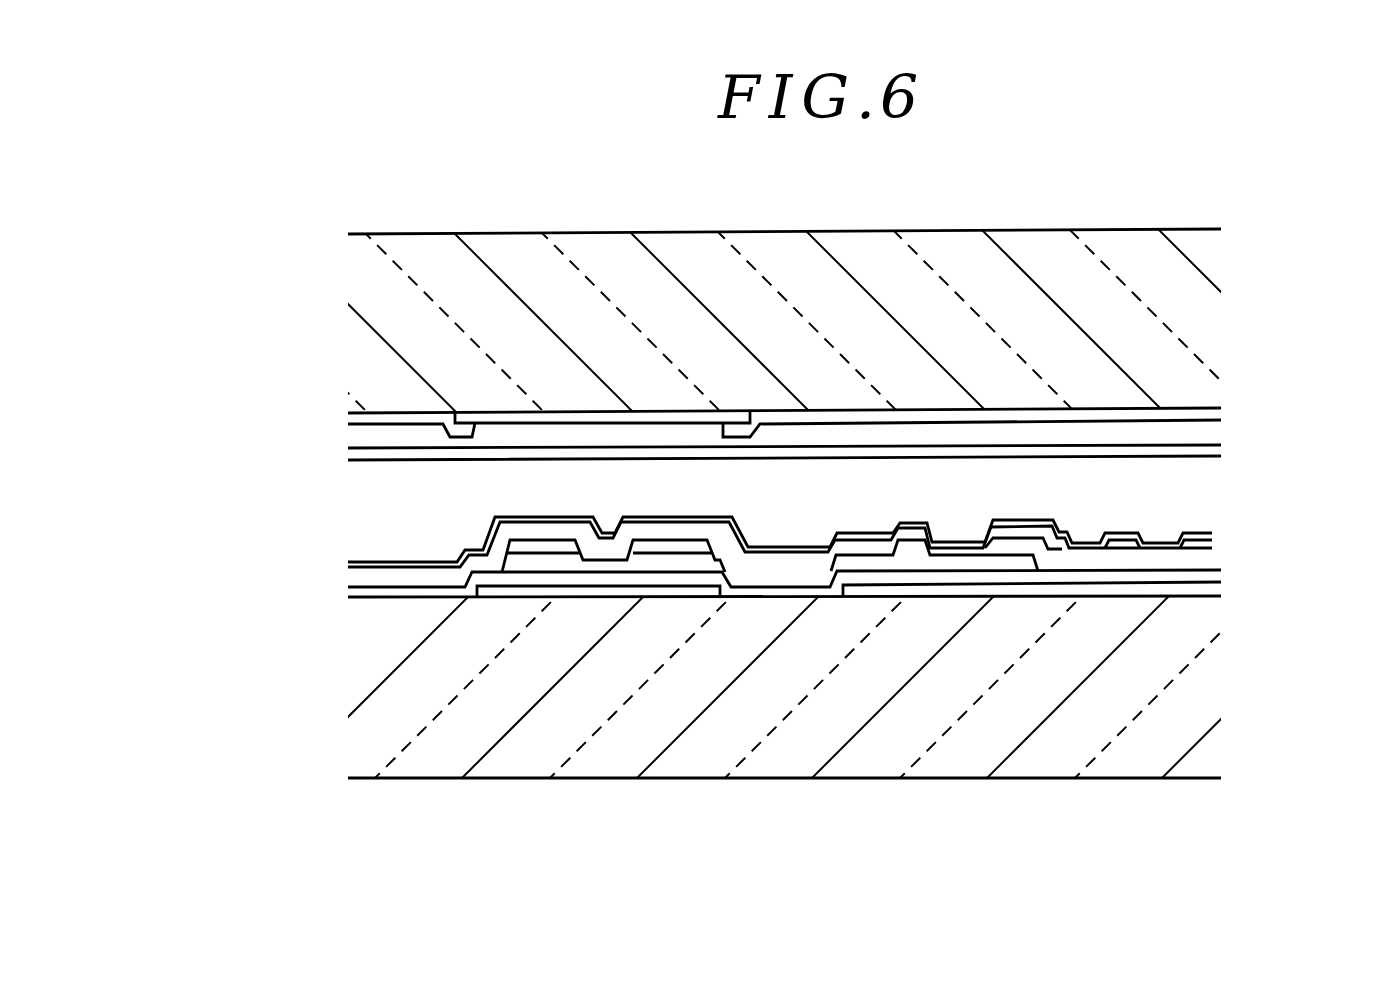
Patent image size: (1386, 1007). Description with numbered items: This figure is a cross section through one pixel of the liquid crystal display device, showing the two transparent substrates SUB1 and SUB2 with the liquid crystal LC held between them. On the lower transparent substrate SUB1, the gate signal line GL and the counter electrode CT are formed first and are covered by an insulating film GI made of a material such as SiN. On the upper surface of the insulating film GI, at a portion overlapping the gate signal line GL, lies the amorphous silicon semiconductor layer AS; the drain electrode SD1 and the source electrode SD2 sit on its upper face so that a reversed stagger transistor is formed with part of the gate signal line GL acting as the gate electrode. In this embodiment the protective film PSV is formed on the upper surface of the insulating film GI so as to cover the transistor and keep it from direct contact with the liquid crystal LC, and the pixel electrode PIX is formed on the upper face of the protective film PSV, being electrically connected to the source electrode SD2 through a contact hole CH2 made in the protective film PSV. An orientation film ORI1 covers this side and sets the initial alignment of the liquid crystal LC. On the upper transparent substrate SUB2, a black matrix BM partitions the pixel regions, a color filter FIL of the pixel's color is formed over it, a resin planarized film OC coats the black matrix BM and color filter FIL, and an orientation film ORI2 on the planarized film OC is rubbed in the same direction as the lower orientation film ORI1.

The transparent substrate SUB1 is at (1200, 693).
The transparent substrate SUB2 is at (1200, 312).
The color filter FIL is at (422, 418).
The black matrix BM is at (580, 417).
The planarized film OC is at (1200, 433).
The orientation film ORI2 is at (356, 452).
The liquid crystal LC is at (784, 511).
The orientation film ORI1 is at (372, 562).
The protective film PSV is at (1205, 556).
The pixel electrode PIX is at (1197, 538).
The insulating film GI is at (1215, 570).
The counter electrode CT is at (1212, 587).
The gate signal line GL is at (492, 597).
The semiconductor layer AS is at (602, 562).
The drain electrode SD1 is at (528, 545).
The source electrode SD2 is at (678, 542).
The contact hole CH2 is at (987, 552).